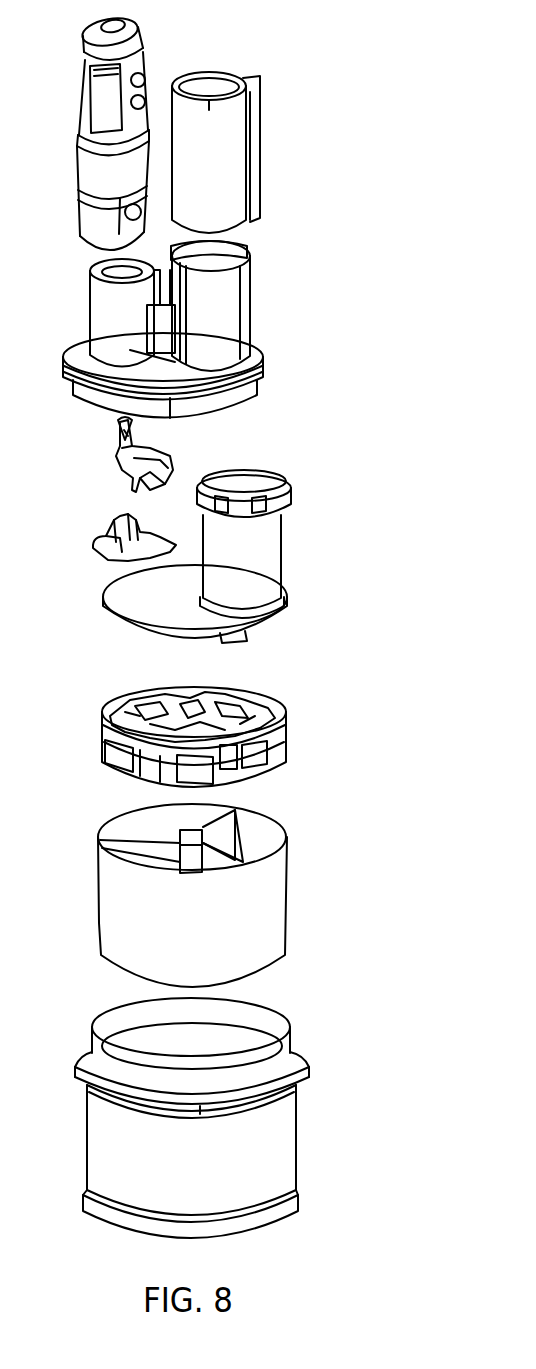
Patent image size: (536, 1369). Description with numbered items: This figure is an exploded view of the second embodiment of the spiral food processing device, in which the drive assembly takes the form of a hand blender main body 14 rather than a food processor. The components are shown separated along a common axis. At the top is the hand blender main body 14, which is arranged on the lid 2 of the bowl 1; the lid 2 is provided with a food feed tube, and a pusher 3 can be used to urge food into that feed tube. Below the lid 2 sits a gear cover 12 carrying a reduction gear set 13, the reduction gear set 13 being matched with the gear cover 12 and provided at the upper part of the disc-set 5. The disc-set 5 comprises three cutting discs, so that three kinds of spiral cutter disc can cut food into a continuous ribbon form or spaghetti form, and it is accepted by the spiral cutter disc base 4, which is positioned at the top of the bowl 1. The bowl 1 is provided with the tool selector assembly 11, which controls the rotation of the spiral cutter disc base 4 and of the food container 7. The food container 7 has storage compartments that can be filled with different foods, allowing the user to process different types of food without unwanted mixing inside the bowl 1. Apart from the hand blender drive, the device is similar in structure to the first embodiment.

The bowl 1 is at (280, 1058).
The lid 2 is at (260, 340).
The pusher 3 is at (232, 177).
The spiral cutter disc base 4 is at (275, 748).
The disc-set 5 is at (267, 703).
The food container 7 is at (257, 930).
The tool selector assembly 11 is at (288, 578).
The gear cover 12 is at (112, 520).
The reduction gear set 13 is at (173, 453).
The hand blender main body 14 is at (143, 58).